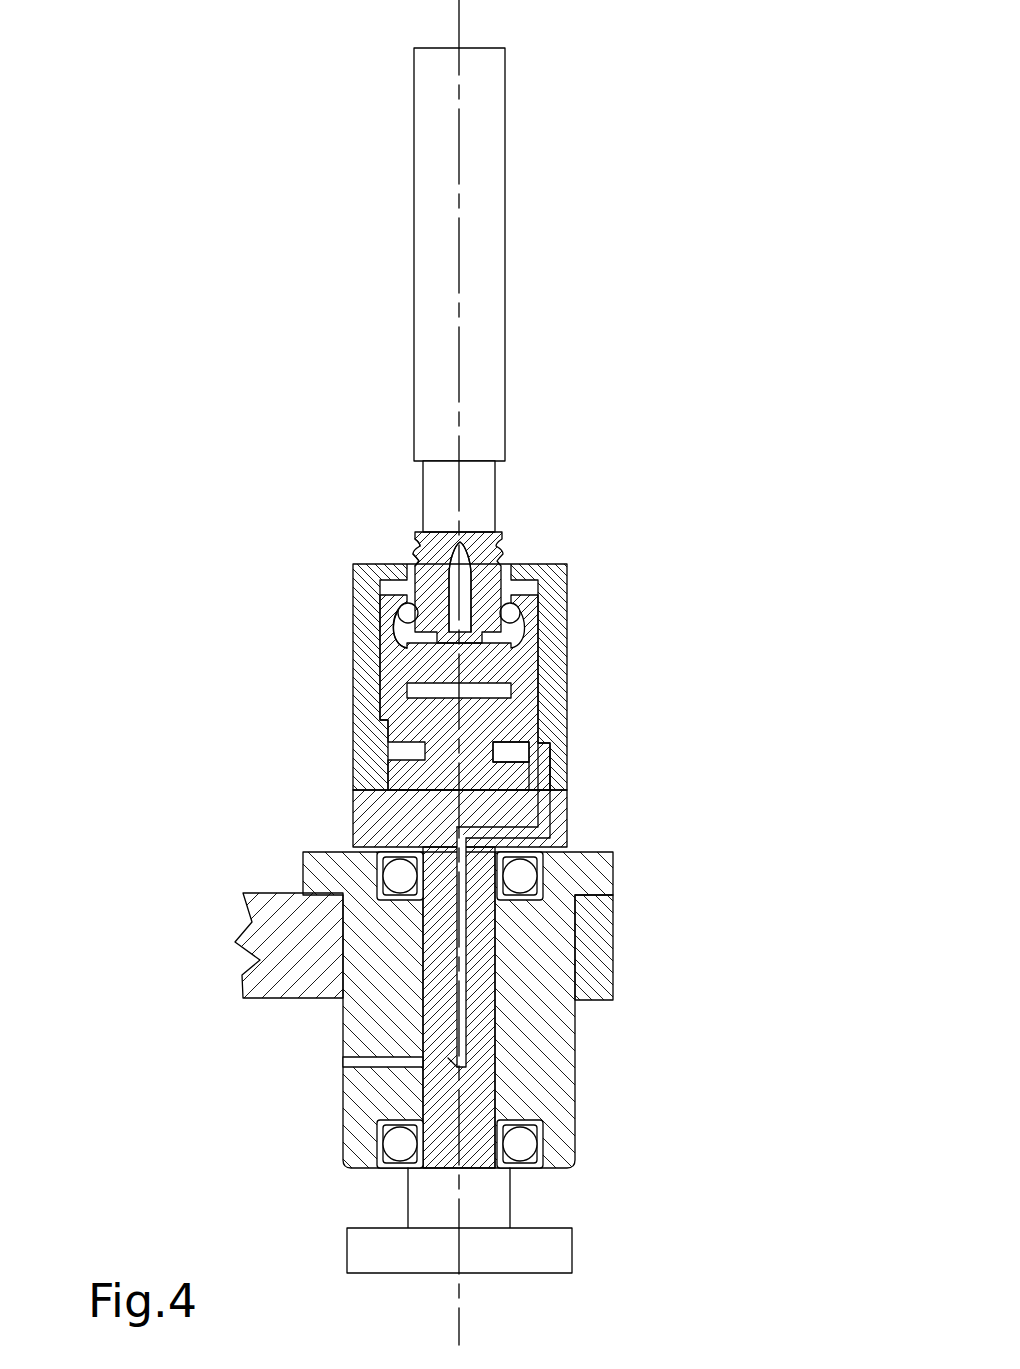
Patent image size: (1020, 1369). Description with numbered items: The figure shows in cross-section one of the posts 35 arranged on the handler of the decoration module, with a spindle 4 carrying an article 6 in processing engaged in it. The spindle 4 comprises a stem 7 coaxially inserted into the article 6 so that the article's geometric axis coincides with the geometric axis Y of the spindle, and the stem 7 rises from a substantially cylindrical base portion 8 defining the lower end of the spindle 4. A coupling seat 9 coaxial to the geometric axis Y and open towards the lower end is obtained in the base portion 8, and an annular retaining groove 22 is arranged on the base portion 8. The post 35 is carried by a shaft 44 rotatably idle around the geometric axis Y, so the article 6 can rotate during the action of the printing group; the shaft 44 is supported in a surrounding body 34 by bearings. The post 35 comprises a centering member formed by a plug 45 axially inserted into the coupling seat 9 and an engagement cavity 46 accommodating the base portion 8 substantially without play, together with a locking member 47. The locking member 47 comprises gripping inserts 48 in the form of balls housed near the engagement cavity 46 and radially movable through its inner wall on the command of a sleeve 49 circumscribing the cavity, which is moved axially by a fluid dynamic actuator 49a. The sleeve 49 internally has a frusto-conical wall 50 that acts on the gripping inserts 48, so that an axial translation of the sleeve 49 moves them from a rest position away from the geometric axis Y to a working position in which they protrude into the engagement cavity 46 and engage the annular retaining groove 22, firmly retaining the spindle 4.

The geometric axis Y is at (459, 17).
The article 6 is at (437, 159).
The stem 7 is at (483, 481).
The coupling seat 9 is at (467, 537).
The spindle 4 is at (482, 534).
The base portion 8 is at (415, 565).
The annular retaining groove 22 is at (417, 540).
The engagement cavity 46 is at (412, 600).
The plug 45 is at (470, 580).
The locking member 47 is at (515, 588).
The gripping inserts 48 is at (514, 611).
The frusto-conical wall 50 is at (393, 635).
The sleeve 49 is at (393, 670).
The fluid dynamic actuator 49a is at (505, 750).
The post 35 is at (516, 669).
The bearing housing 34 is at (595, 944).
The shaft 44 is at (482, 1053).